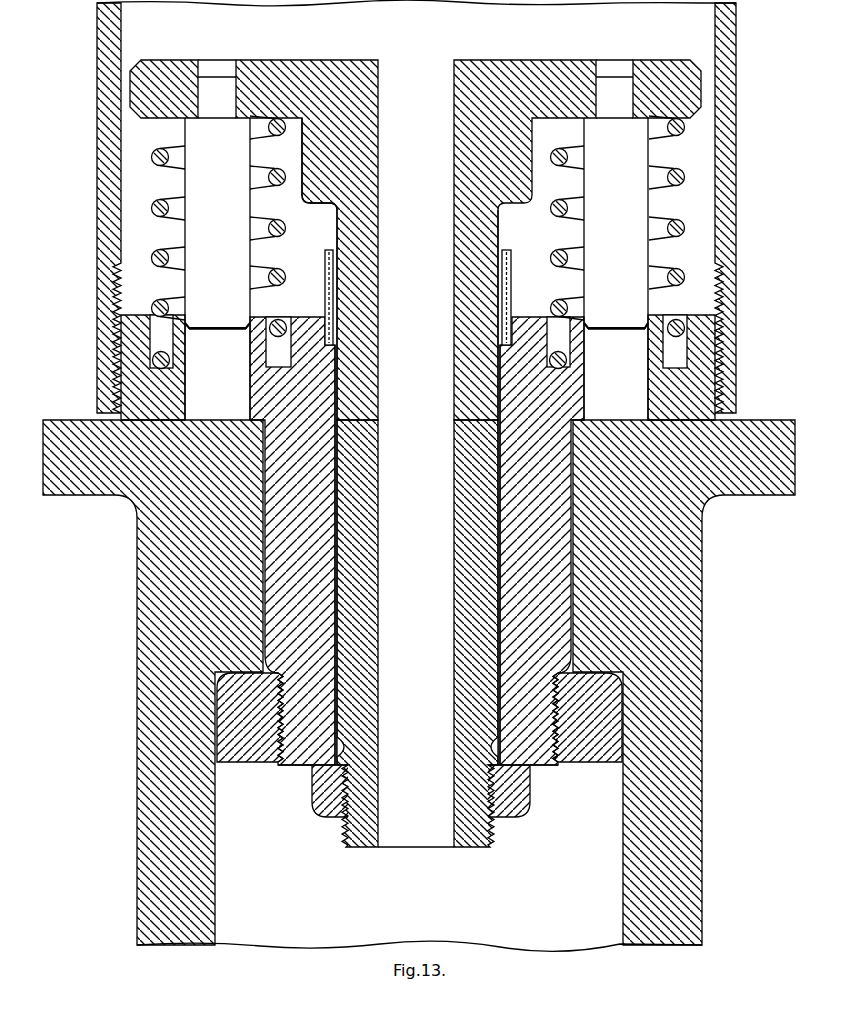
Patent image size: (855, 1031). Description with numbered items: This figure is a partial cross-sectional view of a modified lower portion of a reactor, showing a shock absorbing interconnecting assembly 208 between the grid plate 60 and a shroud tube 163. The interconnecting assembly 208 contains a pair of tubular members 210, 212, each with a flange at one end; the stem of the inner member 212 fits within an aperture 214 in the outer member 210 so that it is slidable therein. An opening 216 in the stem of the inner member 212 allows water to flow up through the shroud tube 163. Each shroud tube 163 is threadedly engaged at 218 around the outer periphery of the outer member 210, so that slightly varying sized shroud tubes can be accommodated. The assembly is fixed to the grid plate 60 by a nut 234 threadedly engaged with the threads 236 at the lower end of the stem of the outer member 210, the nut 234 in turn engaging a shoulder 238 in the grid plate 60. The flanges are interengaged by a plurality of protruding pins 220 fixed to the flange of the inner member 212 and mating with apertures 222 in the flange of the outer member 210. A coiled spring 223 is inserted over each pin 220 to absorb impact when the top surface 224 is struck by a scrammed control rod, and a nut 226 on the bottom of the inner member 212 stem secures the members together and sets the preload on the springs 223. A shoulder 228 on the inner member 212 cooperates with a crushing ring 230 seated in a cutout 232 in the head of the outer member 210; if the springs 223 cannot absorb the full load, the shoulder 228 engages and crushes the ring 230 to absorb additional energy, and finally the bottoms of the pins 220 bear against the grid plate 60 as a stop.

The grid plate 60 is at (698, 788).
The shroud tube 163 is at (737, 62).
The interconnecting assembly 208 is at (522, 65).
The outer tubular member 210 is at (327, 532).
The inner tubular member 212 is at (466, 550).
The aperture 214 is at (337, 643).
The opening 216 is at (400, 846).
The threaded engagement 218 is at (113, 379).
The protruding pin 220 is at (243, 255).
The aperture 222 is at (247, 347).
The coiled spring 223 is at (670, 167).
The top surface 224 is at (316, 60).
The nut 226 is at (531, 784).
The shoulder 228 is at (313, 204).
The crushing ring 230 is at (519, 250).
The cutout 232 is at (323, 303).
The nut 234 is at (603, 757).
The threads 236 is at (278, 770).
The shoulder 238 is at (218, 691).